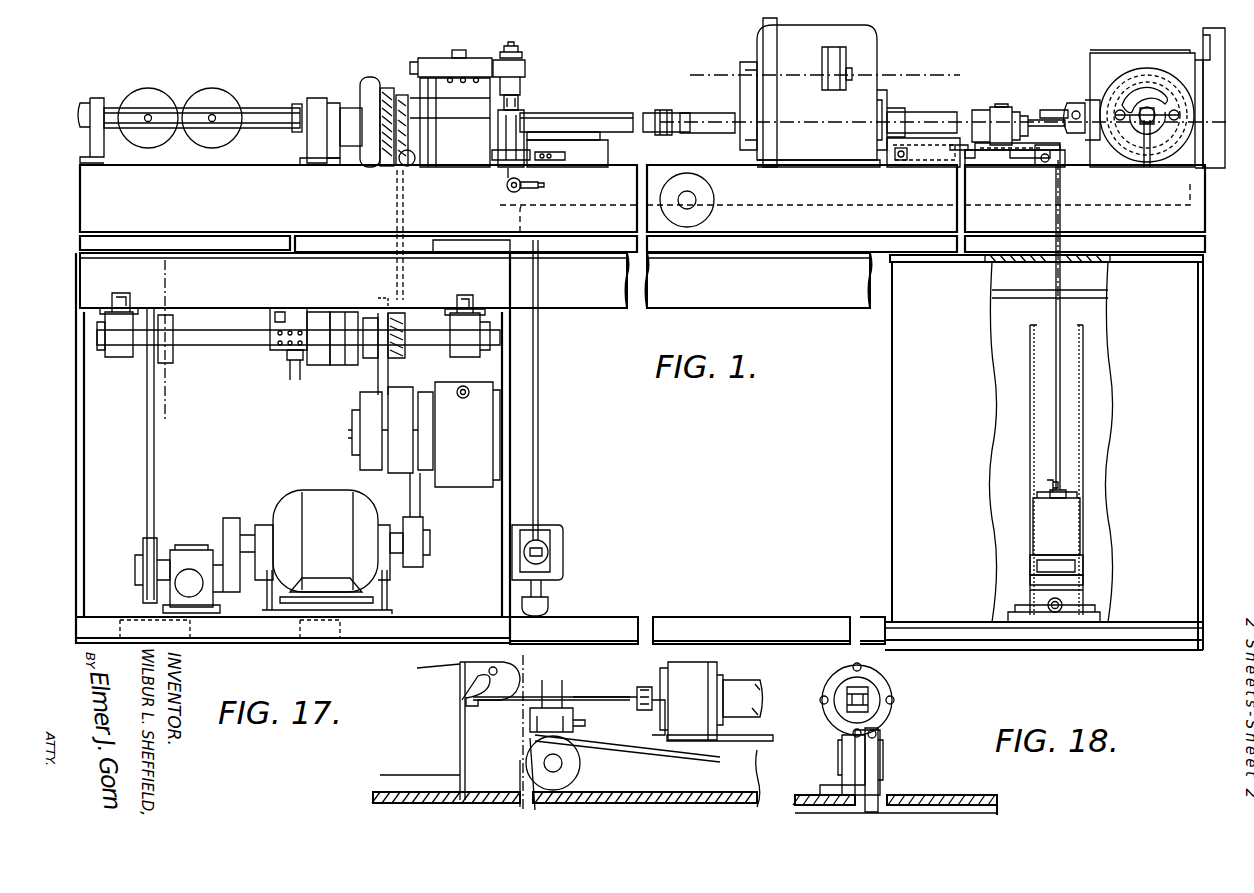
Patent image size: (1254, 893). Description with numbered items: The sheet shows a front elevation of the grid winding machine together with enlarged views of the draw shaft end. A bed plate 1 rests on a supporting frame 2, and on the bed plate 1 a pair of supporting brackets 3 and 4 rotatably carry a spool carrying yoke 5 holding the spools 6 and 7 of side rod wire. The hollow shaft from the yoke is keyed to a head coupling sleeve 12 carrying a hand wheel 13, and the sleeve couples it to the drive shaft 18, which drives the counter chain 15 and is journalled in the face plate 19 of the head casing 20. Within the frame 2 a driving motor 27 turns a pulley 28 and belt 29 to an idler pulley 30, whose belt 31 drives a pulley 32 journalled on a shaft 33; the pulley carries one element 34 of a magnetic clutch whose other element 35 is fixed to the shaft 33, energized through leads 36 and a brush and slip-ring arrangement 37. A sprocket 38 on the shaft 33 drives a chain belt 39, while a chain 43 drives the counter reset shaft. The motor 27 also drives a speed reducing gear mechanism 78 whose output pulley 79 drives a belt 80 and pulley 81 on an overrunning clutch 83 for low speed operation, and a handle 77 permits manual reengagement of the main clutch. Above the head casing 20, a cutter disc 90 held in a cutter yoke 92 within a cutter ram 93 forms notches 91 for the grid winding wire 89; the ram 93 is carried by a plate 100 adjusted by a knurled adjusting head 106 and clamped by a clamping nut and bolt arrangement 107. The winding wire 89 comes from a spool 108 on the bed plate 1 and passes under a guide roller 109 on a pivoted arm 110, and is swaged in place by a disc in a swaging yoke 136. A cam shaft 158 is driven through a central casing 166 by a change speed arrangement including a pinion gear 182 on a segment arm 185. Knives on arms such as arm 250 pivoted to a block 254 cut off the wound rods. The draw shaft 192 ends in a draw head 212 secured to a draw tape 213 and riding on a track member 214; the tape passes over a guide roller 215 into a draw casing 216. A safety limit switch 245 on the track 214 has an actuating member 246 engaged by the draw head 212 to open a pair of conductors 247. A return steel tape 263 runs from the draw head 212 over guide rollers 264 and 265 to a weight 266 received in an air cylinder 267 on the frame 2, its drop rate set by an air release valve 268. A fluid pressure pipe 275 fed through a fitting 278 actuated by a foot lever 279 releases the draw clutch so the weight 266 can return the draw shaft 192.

In FIG. 1, the bed plate 1 is at (100, 200).
In FIG. 17, the bed plate 1 is at (372, 795).
In FIG. 18, the bed plate 1 is at (985, 798).
In FIG. 1, the supporting frame 2 is at (78, 440).
In FIG. 1, the supporting bracket 3 is at (100, 100).
In FIG. 1, the supporting bracket 4 is at (318, 100).
In FIG. 1, the spool carrying yoke 5 is at (262, 108).
In FIG. 1, the spool 6 is at (152, 92).
In FIG. 1, the spool 7 is at (210, 92).
In FIG. 1, the head coupling sleeve 12 is at (345, 132).
In FIG. 1, the hand wheel 13 is at (363, 88).
In FIG. 1, the counter chain 15 is at (380, 92).
In FIG. 17, the drive shaft 18 is at (516, 655).
In FIG. 1, the face plate 19 is at (1070, 103).
In FIG. 1, the head casing 20 is at (462, 150).
In FIG. 1, the driving motor 27 is at (322, 560).
In FIG. 1, the pulley 28 is at (425, 525).
In FIG. 1, the belt 29 is at (415, 502).
In FIG. 1, the idler pulley 30 is at (398, 455).
In FIG. 1, the belt 31 is at (380, 416).
In FIG. 1, the pulley 32 is at (372, 360).
In FIG. 1, the shaft 33 is at (410, 336).
In FIG. 1, the magnetic clutch element 34 is at (345, 360).
In FIG. 1, the magnetic clutch element 35 is at (322, 320).
In FIG. 1, the leads 36 is at (292, 375).
In FIG. 1, the brush and slip-ring arrangement 37 is at (294, 300).
In FIG. 1, the sprocket 38 is at (405, 320).
In FIG. 1, the chain belt 39 is at (395, 238).
In FIG. 1, the chain 43 is at (398, 92).
In FIG. 1, the handle 77 is at (410, 162).
In FIG. 1, the speed reducing gear mechanism 78 is at (190, 558).
In FIG. 1, the output pulley 79 is at (143, 555).
In FIG. 1, the belt 80 is at (155, 458).
In FIG. 1, the pulley 81 is at (135, 350).
In FIG. 1, the overrunning clutch 83 is at (172, 350).
In FIG. 1, the grid winding wire 89 is at (535, 190).
In FIG. 1, the cutter disc 90 is at (522, 102).
In FIG. 1, the notches 91 is at (665, 112).
In FIG. 1, the cutter yoke 92 is at (500, 102).
In FIG. 1, the cutter ram 93 is at (522, 66).
In FIG. 1, the plate 100 is at (485, 60).
In FIG. 1, the knurled adjusting head 106 is at (420, 62).
In FIG. 1, the clamping nut and bolt arrangement 107 is at (510, 46).
In FIG. 1, the spool 108 is at (714, 200).
In FIG. 1, the guide roller 109 is at (512, 192).
In FIG. 1, the arm 110 is at (532, 195).
In FIG. 1, the swaging yoke 136 is at (500, 142).
In FIG. 1, the cam shaft 158 is at (582, 112).
In FIG. 1, the central casing 166 is at (805, 92).
In FIG. 1, the pinion gear 182 is at (850, 72).
In FIG. 1, the segment arm 185 is at (838, 47).
In FIG. 1, the draw shaft 192 is at (712, 132).
In FIG. 17, the draw shaft 192 is at (760, 684).
In FIG. 1, the draw head 212 is at (1000, 110).
In FIG. 17, the draw head 212 is at (700, 668).
In FIG. 18, the draw head 212 is at (882, 690).
In FIG. 17, the draw tape 213 is at (470, 700).
In FIG. 18, the draw tape 213 is at (870, 700).
In FIG. 1, the track member 214 is at (945, 262).
In FIG. 17, the track member 214 is at (530, 740).
In FIG. 18, the track member 214 is at (858, 752).
In FIG. 1, the guide roller 215 is at (1078, 108).
In FIG. 17, the guide roller 215 is at (490, 683).
In FIG. 1, the draw casing 216 is at (1118, 70).
In FIG. 1, the safety limit switch 245 is at (1055, 148).
In FIG. 17, the safety limit switch 245 is at (530, 720).
In FIG. 1, the actuating member 246 is at (1010, 158).
In FIG. 17, the actuating member 246 is at (585, 718).
In FIG. 1, the conductors 247 is at (1042, 110).
In FIG. 17, the conductors 247 is at (575, 680).
In FIG. 1, the arm 250 is at (572, 120).
In FIG. 1, the block 254 is at (595, 145).
In FIG. 1, the return steel tape 263 is at (950, 165).
In FIG. 17, the return steel tape 263 is at (760, 745).
In FIG. 18, the return steel tape 263 is at (880, 777).
In FIG. 1, the guide roller 264 is at (895, 165).
In FIG. 1, the guide roller 265 is at (1000, 158).
In FIG. 17, the guide roller 265 is at (583, 767).
In FIG. 1, the weight 266 is at (1065, 520).
In FIG. 1, the air cylinder 267 is at (1085, 386).
In FIG. 1, the air release valve 268 is at (1048, 604).
In FIG. 1, the fluid pressure pipe 275 is at (1152, 130).
In FIG. 1, the fitting 278 is at (565, 540).
In FIG. 1, the foot lever 279 is at (545, 602).